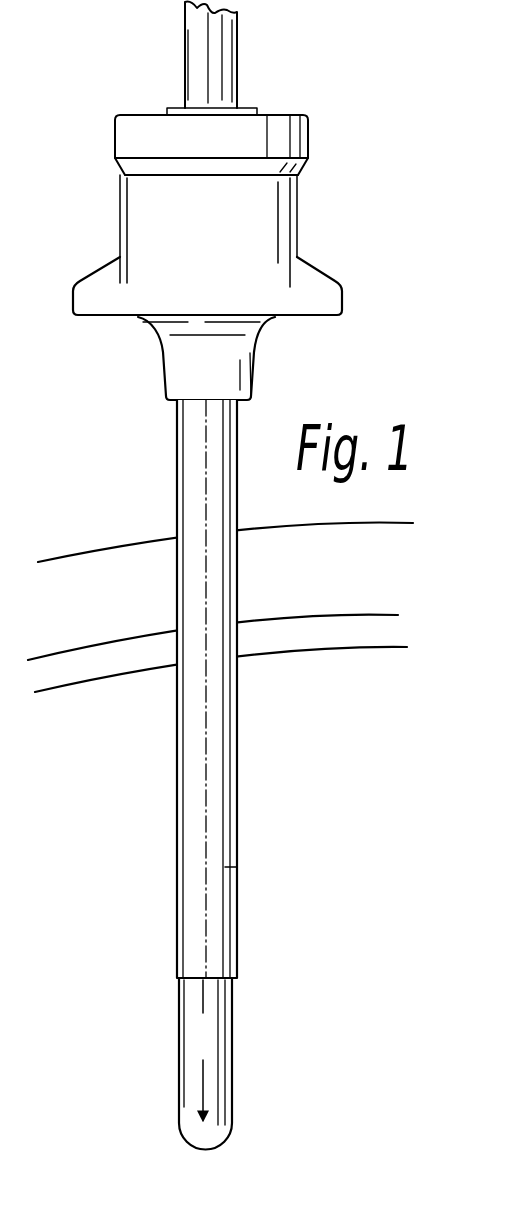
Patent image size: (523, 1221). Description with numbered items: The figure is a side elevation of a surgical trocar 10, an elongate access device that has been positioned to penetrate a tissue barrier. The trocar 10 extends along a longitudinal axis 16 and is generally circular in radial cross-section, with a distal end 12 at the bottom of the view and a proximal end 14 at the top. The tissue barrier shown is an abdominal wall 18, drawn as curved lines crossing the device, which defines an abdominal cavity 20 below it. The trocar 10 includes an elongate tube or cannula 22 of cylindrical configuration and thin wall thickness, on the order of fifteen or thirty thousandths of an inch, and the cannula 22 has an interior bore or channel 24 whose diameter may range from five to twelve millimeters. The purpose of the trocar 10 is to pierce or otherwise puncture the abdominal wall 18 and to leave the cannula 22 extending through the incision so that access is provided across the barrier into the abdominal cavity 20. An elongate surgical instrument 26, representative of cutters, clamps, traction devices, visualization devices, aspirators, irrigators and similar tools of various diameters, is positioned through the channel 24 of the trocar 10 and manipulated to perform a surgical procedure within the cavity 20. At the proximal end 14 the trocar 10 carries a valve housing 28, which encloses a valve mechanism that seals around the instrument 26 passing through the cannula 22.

The trocar 10 is at (150, 432).
The distal end 12 is at (307, 958).
The proximal end 14 is at (365, 300).
The longitudinal axis 16 is at (205, 755).
The abdominal wall 18 is at (153, 585).
The abdominal cavity 20 is at (338, 725).
The cannula 22 is at (225, 867).
The channel 24 is at (197, 915).
The surgical instrument 26 is at (197, 60).
The valve housing 28 is at (278, 231).